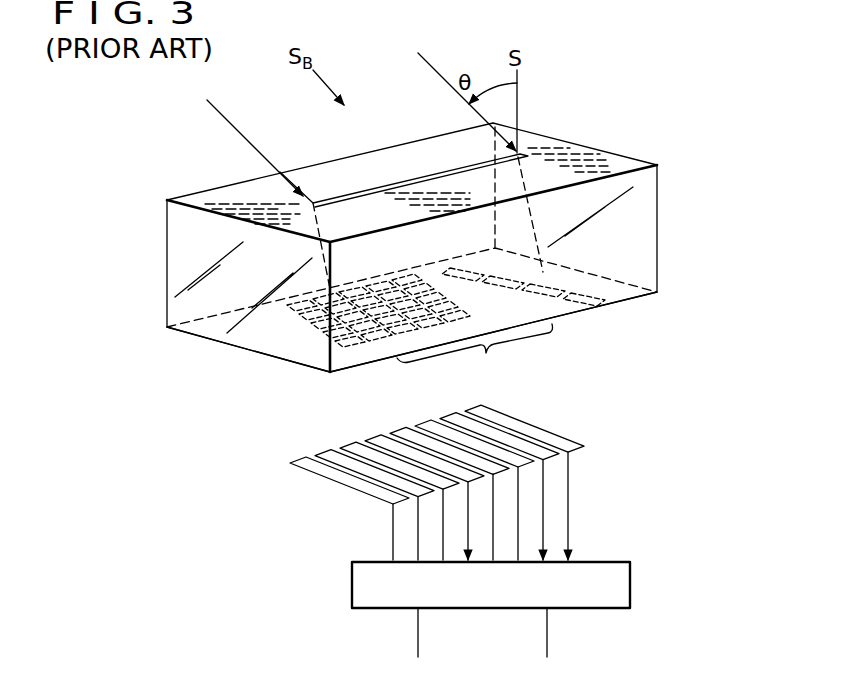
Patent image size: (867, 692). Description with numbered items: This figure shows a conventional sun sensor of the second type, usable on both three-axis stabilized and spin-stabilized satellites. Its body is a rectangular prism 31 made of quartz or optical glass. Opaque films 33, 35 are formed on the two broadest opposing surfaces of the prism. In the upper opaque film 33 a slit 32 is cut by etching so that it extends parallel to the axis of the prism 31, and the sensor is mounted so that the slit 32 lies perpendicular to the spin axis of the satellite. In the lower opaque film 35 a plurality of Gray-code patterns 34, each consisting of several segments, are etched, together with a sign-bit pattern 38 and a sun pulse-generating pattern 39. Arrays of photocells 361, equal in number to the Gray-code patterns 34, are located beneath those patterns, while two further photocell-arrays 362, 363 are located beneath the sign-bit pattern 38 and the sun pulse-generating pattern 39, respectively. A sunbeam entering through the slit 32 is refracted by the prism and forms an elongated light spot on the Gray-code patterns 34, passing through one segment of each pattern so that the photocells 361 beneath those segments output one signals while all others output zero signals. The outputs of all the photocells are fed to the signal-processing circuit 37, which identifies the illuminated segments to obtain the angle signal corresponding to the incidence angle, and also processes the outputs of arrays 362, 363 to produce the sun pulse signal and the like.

The rectangular prism 31 is at (176, 285).
The slit 32 is at (376, 188).
The opaque film 33 is at (236, 192).
The Gray-code patterns 34 is at (475, 355).
The opaque film 35 is at (268, 337).
The signal-processing circuit 37 is at (632, 576).
The sign-bit pattern 38 is at (467, 270).
The sun pulse-generating pattern 39 is at (585, 286).
The arrays of photocells 361 is at (430, 416).
The photocell-array 362 is at (453, 414).
The photocell-array 363 is at (475, 403).